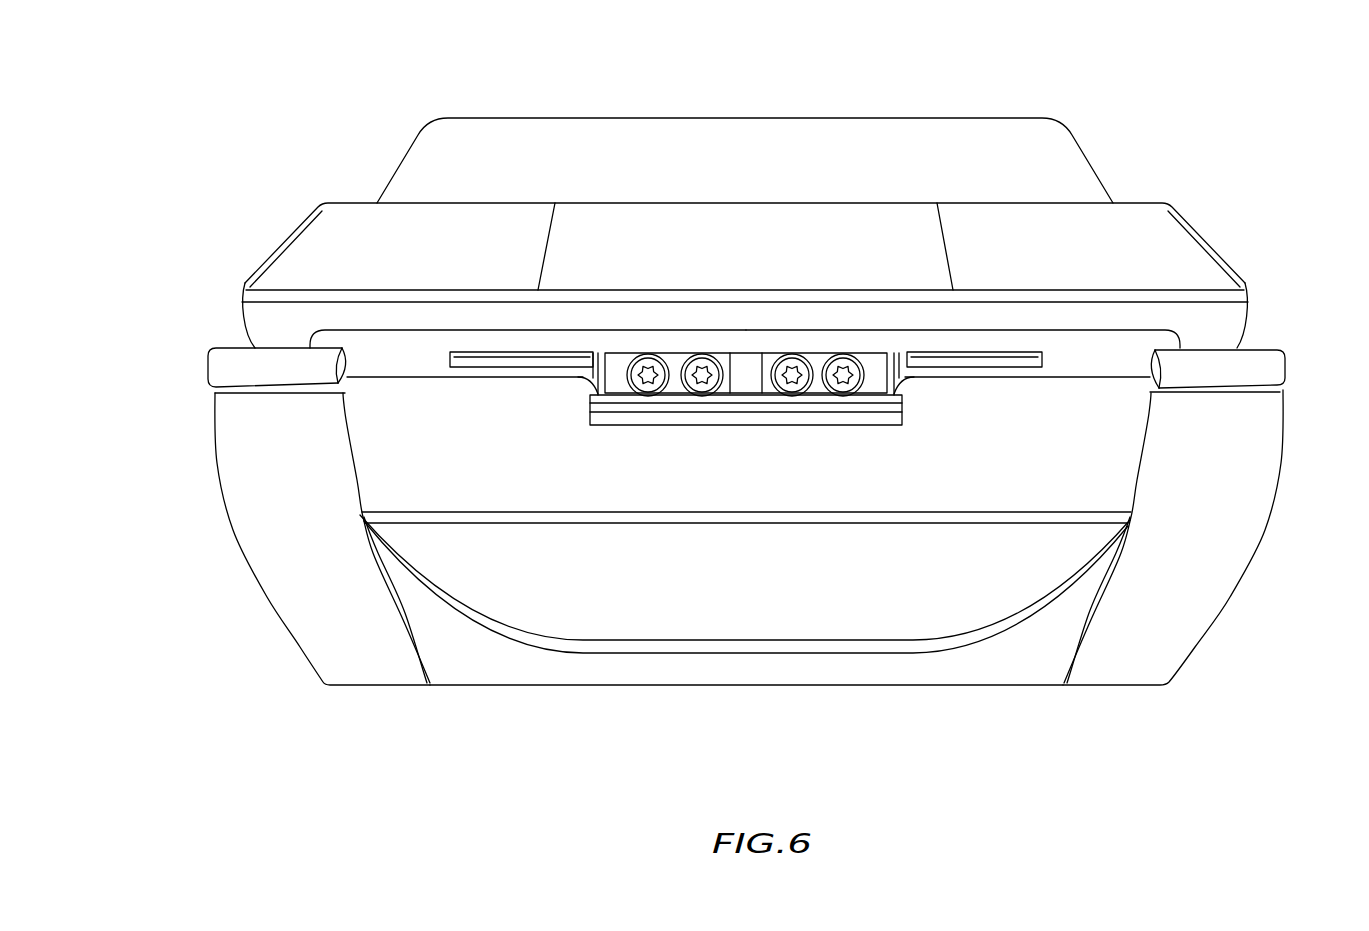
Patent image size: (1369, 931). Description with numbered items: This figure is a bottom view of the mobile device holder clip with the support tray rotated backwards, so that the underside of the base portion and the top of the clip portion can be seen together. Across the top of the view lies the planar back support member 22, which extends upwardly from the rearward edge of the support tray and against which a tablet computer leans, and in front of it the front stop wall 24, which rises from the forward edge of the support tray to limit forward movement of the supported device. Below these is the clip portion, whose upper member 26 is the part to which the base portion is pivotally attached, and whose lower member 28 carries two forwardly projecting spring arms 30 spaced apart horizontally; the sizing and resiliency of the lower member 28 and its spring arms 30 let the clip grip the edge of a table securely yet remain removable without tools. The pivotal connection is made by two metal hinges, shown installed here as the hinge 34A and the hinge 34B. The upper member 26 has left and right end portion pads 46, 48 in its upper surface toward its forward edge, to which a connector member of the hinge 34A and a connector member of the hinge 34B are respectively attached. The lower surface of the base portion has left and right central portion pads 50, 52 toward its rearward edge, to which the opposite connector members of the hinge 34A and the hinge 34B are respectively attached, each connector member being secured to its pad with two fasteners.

The planar back support member 22 is at (750, 148).
The front stop wall 24 is at (1153, 258).
The upper member 26 is at (693, 492).
The lower member 28 is at (1168, 642).
The spring arms 30 is at (250, 463).
The hinge 34A is at (528, 363).
The hinge 34B is at (963, 363).
The left end portion pad 46 is at (395, 348).
The right end portion pad 48 is at (1097, 350).
The left central portion pad 50 is at (678, 360).
The right central portion pad 52 is at (817, 357).